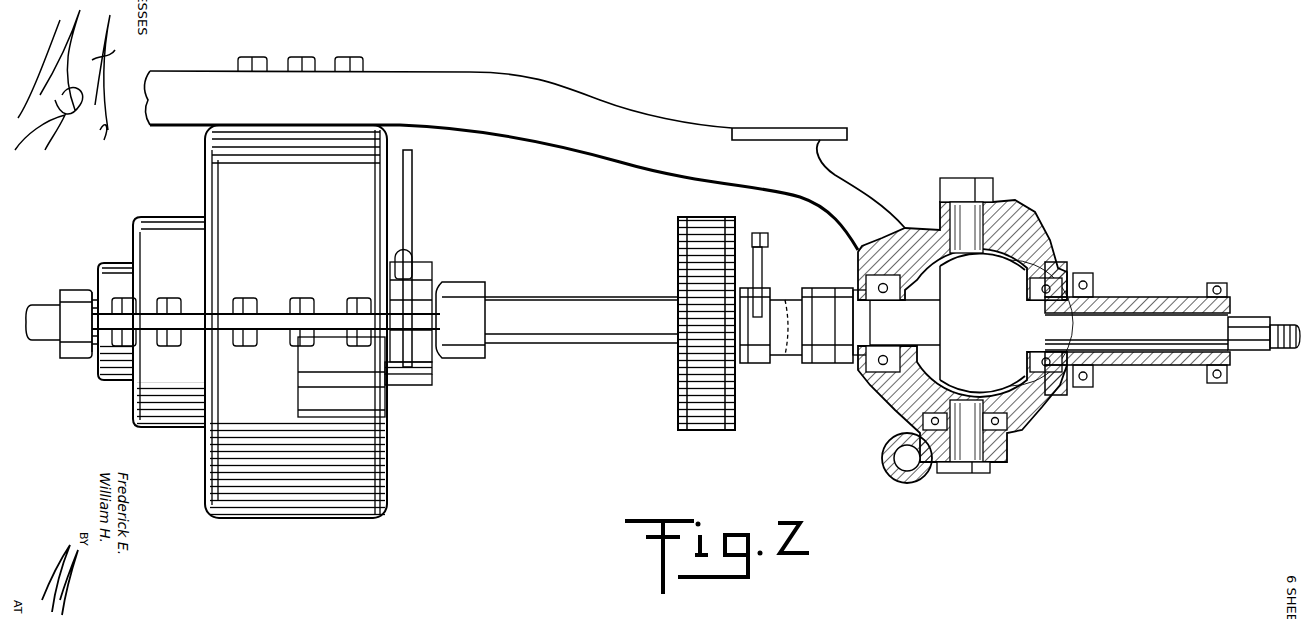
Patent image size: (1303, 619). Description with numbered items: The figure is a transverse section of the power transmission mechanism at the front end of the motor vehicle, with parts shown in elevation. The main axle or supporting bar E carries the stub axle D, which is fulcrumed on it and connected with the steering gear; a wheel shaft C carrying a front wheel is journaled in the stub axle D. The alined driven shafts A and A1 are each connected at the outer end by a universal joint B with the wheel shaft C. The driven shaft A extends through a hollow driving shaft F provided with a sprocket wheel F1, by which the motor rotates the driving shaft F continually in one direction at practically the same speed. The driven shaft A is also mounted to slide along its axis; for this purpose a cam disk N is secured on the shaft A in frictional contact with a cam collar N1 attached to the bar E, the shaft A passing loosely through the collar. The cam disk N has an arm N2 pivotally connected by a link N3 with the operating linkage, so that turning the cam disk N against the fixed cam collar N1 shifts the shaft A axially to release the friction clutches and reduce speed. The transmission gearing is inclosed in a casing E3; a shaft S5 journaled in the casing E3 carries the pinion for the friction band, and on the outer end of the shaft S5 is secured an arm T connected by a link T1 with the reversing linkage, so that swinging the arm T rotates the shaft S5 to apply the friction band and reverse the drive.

The main axle or supporting bar E is at (583, 104).
The casing E3 is at (266, 321).
The driven shaft A1 is at (42, 304).
The link T1 is at (414, 211).
The arm T is at (407, 293).
The shaft S5 is at (398, 368).
The hollow driving shaft F is at (573, 307).
The sprocket wheel F1 is at (687, 238).
The cam disk N is at (757, 357).
The cam collar N1 is at (807, 357).
The arm N2 is at (763, 263).
The link N3 is at (769, 239).
The driven shaft A is at (855, 290).
The universal joint B is at (1006, 323).
The stub axle D is at (1022, 213).
The wheel shaft C is at (1160, 317).